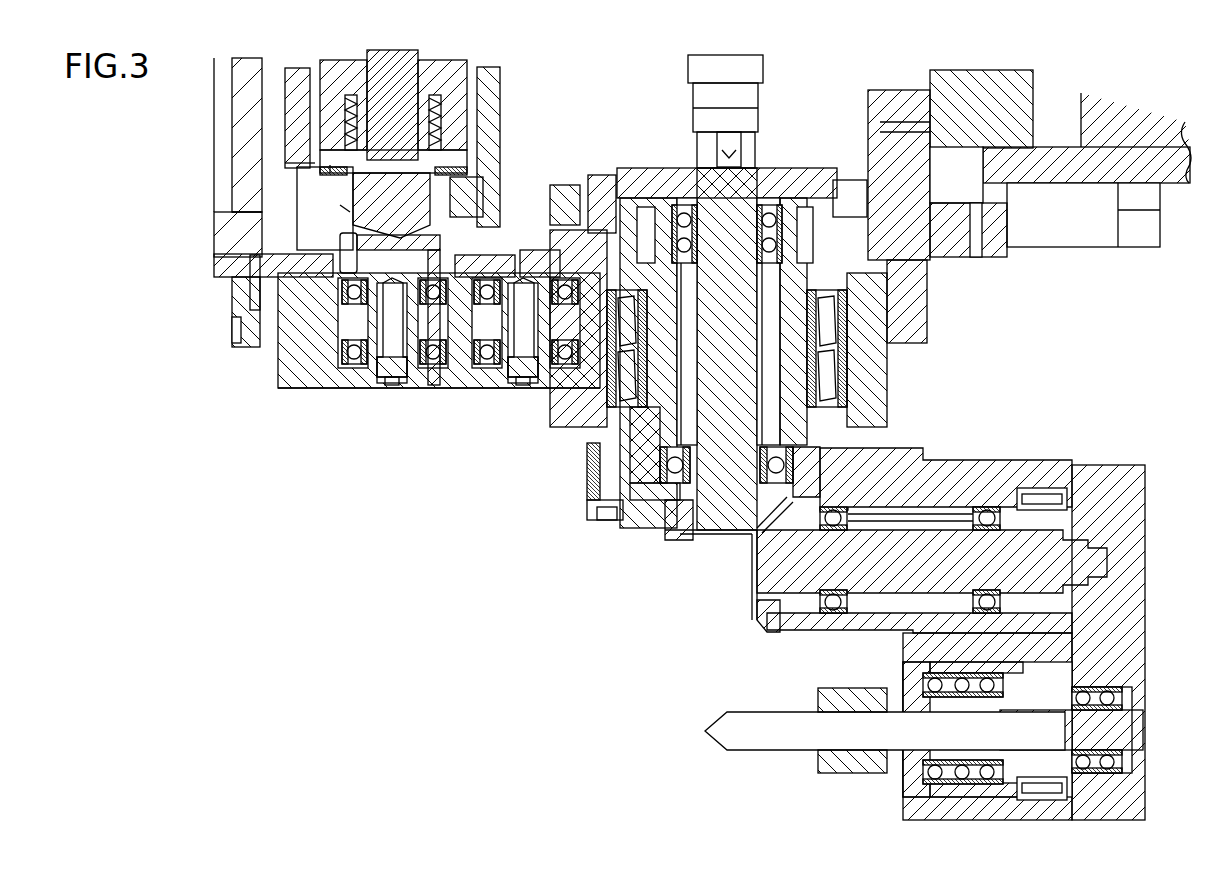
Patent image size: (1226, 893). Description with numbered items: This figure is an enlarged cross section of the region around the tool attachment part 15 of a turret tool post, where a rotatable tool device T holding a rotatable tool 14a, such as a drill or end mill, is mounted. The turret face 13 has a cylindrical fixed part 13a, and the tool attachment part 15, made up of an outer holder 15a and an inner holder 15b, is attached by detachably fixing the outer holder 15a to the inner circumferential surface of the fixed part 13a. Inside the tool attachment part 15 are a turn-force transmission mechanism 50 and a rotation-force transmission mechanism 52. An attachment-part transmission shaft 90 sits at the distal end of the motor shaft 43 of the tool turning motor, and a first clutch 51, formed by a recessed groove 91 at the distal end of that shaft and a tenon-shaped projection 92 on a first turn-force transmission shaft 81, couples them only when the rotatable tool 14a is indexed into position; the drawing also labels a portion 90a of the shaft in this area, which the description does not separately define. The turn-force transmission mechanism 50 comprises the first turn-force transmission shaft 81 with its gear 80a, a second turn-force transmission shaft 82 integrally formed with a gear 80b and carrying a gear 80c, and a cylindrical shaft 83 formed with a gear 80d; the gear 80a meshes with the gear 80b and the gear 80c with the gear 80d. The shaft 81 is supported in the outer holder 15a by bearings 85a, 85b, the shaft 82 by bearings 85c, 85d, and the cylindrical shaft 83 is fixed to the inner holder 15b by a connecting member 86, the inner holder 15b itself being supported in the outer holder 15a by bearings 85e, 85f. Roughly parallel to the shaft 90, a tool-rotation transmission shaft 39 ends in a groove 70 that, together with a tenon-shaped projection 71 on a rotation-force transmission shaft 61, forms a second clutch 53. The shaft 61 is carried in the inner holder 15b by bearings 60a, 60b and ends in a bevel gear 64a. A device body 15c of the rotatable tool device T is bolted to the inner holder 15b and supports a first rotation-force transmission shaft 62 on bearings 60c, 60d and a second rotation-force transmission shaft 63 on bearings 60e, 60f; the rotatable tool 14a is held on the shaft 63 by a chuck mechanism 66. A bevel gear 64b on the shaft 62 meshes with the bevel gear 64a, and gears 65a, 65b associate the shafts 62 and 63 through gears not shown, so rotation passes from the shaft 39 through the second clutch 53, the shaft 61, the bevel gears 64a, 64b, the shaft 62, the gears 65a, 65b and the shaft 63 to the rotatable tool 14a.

The turret face 13 is at (253, 352).
The fixed part 13a is at (927, 320).
The rotatable tool 14a is at (745, 752).
The tool attachment part 15 is at (485, 398).
The outer holder 15a is at (318, 395).
The inner holder 15b is at (632, 422).
The device body 15c is at (990, 465).
The tool-rotation transmission shaft 39 is at (742, 77).
The motor shaft 43 is at (400, 77).
The turn-force transmission mechanism 50 is at (348, 378).
The first clutch 51 is at (345, 240).
The rotation-force transmission mechanism 52 is at (840, 355).
The second clutch 53 is at (687, 127).
The bearing 60a is at (765, 222).
The bearing 60b is at (678, 470).
The bearing 60c is at (835, 515).
The bearing 60d is at (990, 515).
The bearing 60e is at (1107, 690).
The bearing 60f is at (935, 688).
The rotation-force transmission shaft 61 is at (630, 462).
The first rotation-force transmission shaft 62 is at (948, 517).
The second rotation-force transmission shaft 63 is at (1115, 735).
The bevel gear 64a is at (677, 515).
The bevel gear 64b is at (757, 625).
The gear 65a is at (1060, 498).
The gear 65b is at (1050, 800).
The chuck mechanism 66 is at (830, 775).
The groove 70 is at (718, 140).
The tenon-shaped projection 71 is at (728, 150).
The gear 80a is at (340, 250).
The gear 80b is at (440, 253).
The gear 80c is at (482, 183).
The gear 80d is at (572, 205).
The first turn-force transmission shaft 81 is at (320, 330).
The second turn-force transmission shaft 82 is at (545, 385).
The cylindrical shaft 83 is at (600, 220).
The bearing 85a is at (300, 295).
The bearing 85b is at (350, 352).
The bearing 85c is at (478, 300).
The bearing 85d is at (490, 356).
The bearing 85e is at (848, 300).
The bearing 85f is at (848, 385).
The connecting member 86 is at (810, 225).
The attachment-part transmission shaft 90 is at (350, 195).
The worm wheel portion 90a is at (330, 165).
The recessed groove 91 is at (345, 225).
The tenon-shaped projection 92 is at (350, 210).
The rotatable tool device T is at (1148, 595).